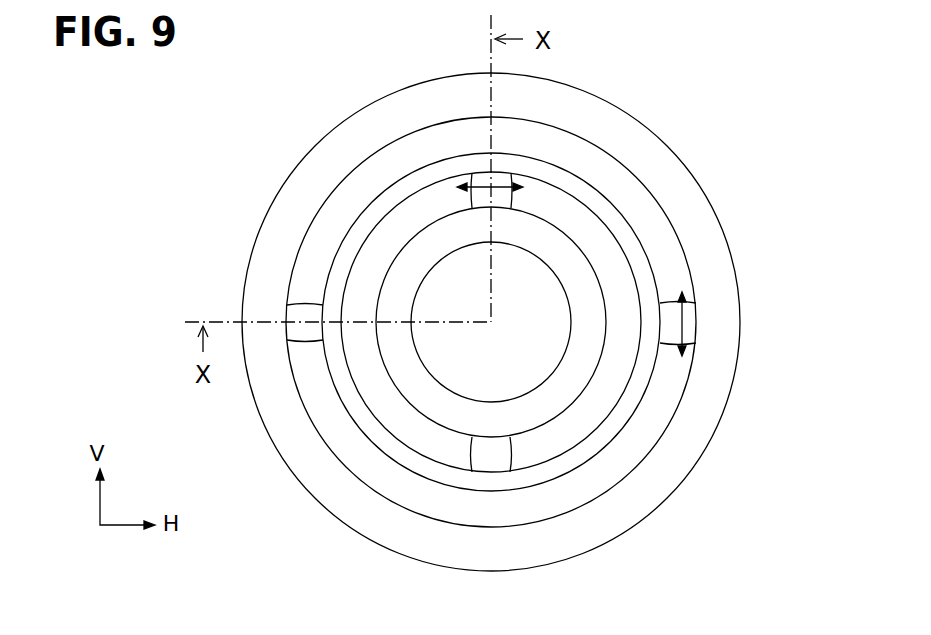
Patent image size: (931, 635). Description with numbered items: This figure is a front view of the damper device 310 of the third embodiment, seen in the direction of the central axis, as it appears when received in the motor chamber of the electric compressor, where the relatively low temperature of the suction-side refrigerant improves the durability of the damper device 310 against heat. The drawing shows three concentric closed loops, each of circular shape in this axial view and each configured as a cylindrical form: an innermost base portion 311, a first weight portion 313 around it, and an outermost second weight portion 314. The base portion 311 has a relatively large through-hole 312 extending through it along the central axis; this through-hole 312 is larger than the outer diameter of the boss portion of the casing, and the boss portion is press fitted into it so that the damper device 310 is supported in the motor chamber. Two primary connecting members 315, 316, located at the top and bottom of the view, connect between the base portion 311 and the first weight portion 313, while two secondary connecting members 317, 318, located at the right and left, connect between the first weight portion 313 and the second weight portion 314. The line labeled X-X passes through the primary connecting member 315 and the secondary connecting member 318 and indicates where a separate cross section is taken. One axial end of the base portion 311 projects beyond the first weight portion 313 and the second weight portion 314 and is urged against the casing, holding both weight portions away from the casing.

The damper device 310 is at (687, 138).
The base portion 311 is at (398, 305).
The through-hole 312 is at (443, 282).
The first weight portion 313 is at (397, 188).
The second weight portion 314 is at (399, 118).
The primary connecting member 315 is at (500, 198).
The primary connecting member 316 is at (497, 457).
The secondary connecting member 317 is at (688, 323).
The secondary connecting member 318 is at (304, 327).